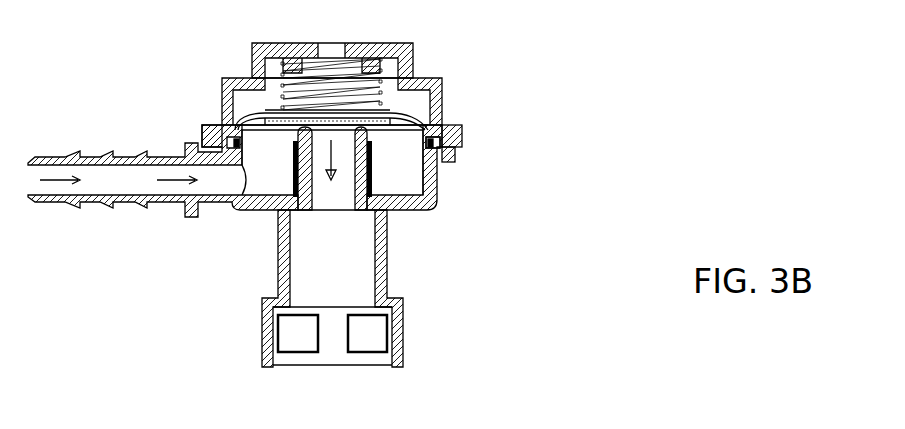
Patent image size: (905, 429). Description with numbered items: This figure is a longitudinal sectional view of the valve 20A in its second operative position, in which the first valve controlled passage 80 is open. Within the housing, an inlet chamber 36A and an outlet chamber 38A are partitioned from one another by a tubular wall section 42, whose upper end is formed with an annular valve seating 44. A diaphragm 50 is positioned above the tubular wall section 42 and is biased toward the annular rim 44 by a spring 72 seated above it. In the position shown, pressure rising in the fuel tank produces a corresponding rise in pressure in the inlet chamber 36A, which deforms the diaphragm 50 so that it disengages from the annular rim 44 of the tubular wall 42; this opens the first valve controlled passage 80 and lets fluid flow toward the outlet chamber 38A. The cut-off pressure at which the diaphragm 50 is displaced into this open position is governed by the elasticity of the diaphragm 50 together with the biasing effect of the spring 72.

The valve 20A is at (271, 184).
The inlet chamber 36A is at (268, 165).
The outlet chamber 38A is at (331, 185).
The tubular wall section 42 is at (360, 157).
The annular valve seating 44 is at (436, 146).
The diaphragm 50 is at (388, 115).
The spring 72 is at (340, 72).
The first valve controlled passage 80 is at (331, 135).